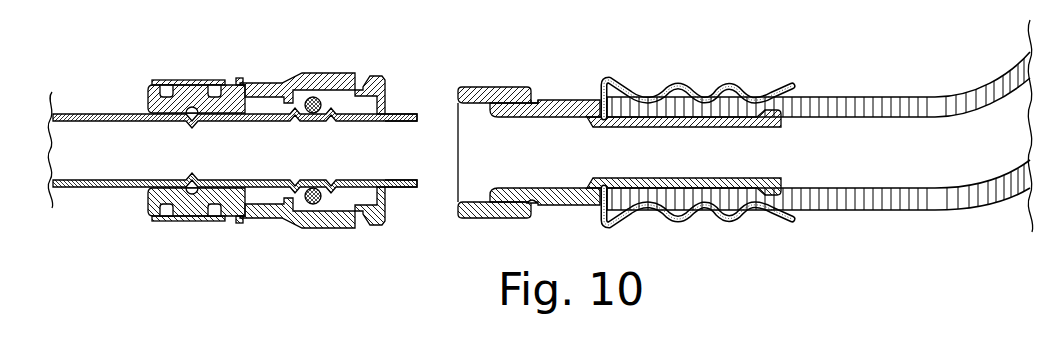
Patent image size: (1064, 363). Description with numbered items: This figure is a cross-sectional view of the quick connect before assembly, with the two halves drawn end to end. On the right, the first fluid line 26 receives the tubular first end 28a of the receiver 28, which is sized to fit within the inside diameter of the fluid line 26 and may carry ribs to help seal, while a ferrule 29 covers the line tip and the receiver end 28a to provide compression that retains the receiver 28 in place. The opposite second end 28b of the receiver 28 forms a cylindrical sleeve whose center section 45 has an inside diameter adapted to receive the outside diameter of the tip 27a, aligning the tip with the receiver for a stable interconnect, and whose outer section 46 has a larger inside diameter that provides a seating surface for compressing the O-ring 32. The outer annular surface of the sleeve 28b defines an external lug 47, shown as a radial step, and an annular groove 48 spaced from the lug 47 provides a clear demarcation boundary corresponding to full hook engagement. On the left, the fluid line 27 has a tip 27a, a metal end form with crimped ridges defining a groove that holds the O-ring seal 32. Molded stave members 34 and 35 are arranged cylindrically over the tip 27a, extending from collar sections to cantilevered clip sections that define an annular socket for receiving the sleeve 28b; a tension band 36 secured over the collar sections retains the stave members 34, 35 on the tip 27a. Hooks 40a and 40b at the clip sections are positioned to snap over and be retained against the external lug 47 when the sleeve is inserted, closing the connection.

The first fluid line 26 is at (918, 96).
The fluid line 27 is at (93, 187).
The tip 27a is at (408, 190).
The receiver 28 is at (580, 96).
The first end 28a is at (762, 178).
The second end 28b is at (498, 86).
The ferrule 29 is at (729, 84).
The O-ring seal 32 is at (313, 204).
The stave member 34 is at (266, 84).
The stave member 35 is at (261, 218).
The tension band 36 is at (168, 80).
The hook 40a is at (347, 92).
The hook 40b is at (345, 230).
The center section 45 is at (556, 189).
The outer section 46 is at (476, 199).
The external lug 47 is at (535, 206).
The annular groove 48 is at (534, 99).